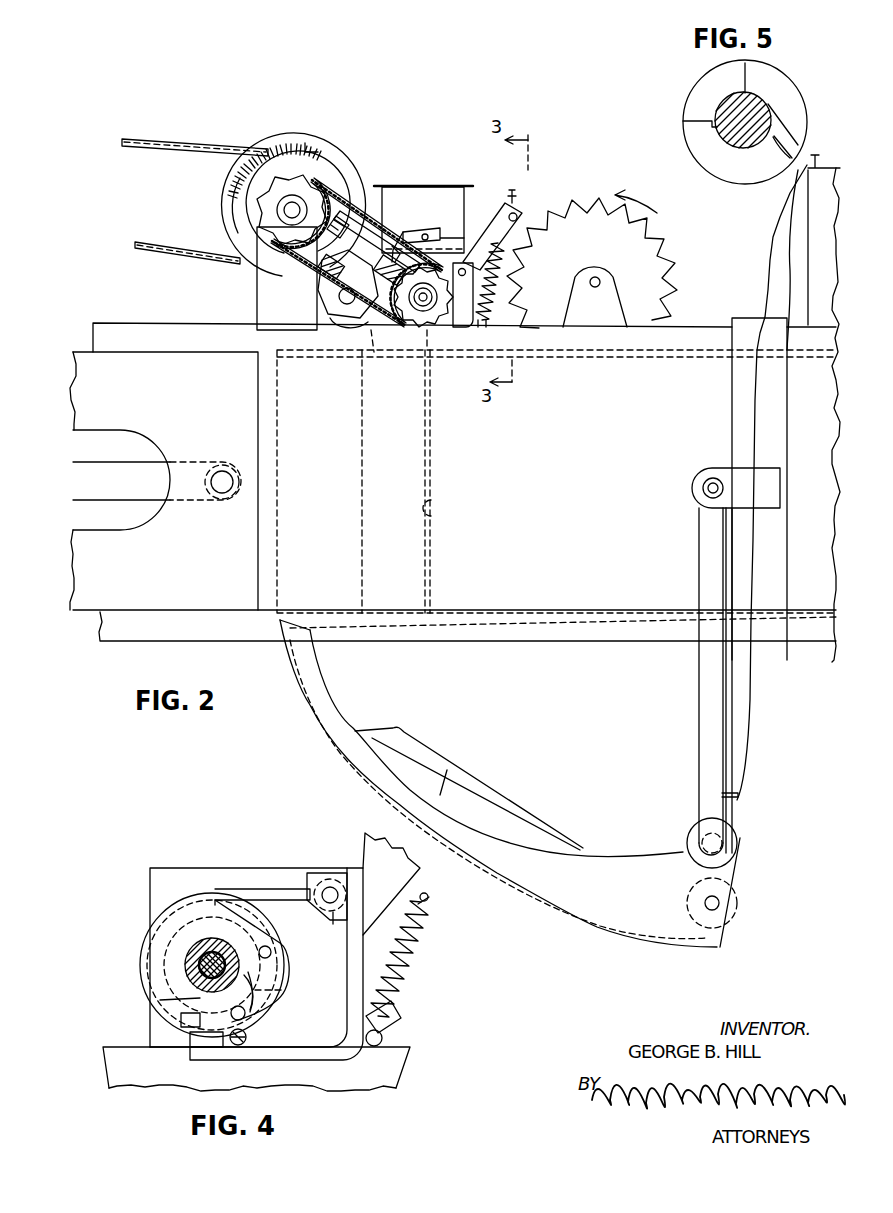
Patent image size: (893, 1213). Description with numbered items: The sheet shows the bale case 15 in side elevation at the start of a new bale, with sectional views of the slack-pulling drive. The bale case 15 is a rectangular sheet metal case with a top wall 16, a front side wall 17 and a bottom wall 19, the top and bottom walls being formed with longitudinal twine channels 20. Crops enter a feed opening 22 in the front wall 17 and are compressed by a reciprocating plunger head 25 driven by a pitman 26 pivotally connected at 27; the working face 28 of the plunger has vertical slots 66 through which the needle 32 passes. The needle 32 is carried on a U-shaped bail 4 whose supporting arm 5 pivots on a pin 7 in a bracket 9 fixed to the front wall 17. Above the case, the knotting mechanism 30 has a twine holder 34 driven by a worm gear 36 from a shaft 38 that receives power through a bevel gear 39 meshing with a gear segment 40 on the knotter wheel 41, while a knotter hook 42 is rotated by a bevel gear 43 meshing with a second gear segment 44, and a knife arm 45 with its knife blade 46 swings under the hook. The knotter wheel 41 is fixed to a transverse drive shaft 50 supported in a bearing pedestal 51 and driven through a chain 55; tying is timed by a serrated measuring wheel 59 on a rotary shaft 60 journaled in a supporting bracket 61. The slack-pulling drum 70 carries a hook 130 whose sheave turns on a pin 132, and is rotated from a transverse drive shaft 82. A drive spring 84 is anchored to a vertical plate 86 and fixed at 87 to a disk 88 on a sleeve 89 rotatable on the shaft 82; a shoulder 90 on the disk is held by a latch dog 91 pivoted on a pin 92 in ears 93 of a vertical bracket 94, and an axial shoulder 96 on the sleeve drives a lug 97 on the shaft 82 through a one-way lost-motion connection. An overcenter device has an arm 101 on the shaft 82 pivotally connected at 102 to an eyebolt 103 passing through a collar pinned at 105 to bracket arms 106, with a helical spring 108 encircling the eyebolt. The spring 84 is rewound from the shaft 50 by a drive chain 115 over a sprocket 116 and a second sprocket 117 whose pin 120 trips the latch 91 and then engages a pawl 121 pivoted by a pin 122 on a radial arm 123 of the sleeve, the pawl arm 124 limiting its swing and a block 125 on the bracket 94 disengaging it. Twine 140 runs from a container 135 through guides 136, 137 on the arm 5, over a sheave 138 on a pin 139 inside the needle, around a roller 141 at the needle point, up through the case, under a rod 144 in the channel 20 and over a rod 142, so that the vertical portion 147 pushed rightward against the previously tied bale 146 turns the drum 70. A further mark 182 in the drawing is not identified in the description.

In FIG. 2, the U-shaped bail 4 is at (718, 848).
In FIG. 2, the supporting arm 5 is at (722, 710).
In FIG. 2, the pin 7 is at (704, 491).
In FIG. 2, the bracket 9 is at (700, 474).
In FIG. 2, the bale case 15 is at (551, 473).
In FIG. 2, the top wall 16 is at (689, 356).
In FIG. 2, the front side wall 17 is at (530, 600).
In FIG. 2, the bottom wall 19 is at (631, 612).
In FIG. 2, the channel 20 is at (122, 325).
In FIG. 2, the feed opening 22 is at (265, 425).
In FIG. 2, the plunger head 25 is at (84, 612).
In FIG. 2, the pitman 26 is at (97, 472).
In FIG. 2, the pivotal connection 27 is at (222, 470).
In FIG. 2, the working face 28 is at (366, 456).
In FIG. 2, the knotting mechanism 30 is at (330, 340).
In FIG. 2, the needle 32 is at (531, 905).
In FIG. 2, the twine holder 34 is at (385, 330).
In FIG. 2, the worm gear 36 is at (390, 246).
In FIG. 2, the shaft 38 is at (363, 240).
In FIG. 2, the bevel gear 39 is at (334, 222).
In FIG. 2, the gear segment 40 is at (263, 152).
In FIG. 2, the knotter wheel 41 is at (222, 186).
In FIG. 2, the knotter hook 42 is at (340, 325).
In FIG. 2, the bevel gear 43 is at (322, 274).
In FIG. 2, the gear segment 44 is at (292, 142).
In FIG. 2, the knife arm 45 is at (322, 296).
In FIG. 2, the knife blade 46 is at (332, 316).
In FIG. 2, the transverse drive shaft 50 is at (288, 210).
In FIG. 2, the bearing pedestal 51 is at (262, 303).
In FIG. 2, the power transmitting chain 55 is at (150, 245).
In FIG. 2, the measuring wheel 59 is at (665, 258).
In FIG. 2, the rotary shaft 60 is at (596, 278).
In FIG. 2, the supporting bracket 61 is at (616, 306).
In FIG. 2, the slot 66 is at (278, 528).
In FIG. 2, the drum 70 is at (446, 196).
In FIG. 4, the drive shaft 82 is at (224, 962).
In FIG. 5, the drive shaft 82 is at (742, 135).
In FIG. 4, the drive spring 84 is at (154, 915).
In FIG. 4, the vertical plate 86 is at (238, 870).
In FIG. 4, the spring attachment point 87 is at (272, 954).
In FIG. 4, the disk 88 is at (188, 900).
In FIG. 4, the sleeve 89 is at (188, 950).
In FIG. 5, the sleeve 89 is at (779, 86).
In FIG. 4, the shoulder 90 is at (215, 893).
In FIG. 4, the latch dog 91 is at (259, 890).
In FIG. 4, the pivot pin 92 is at (329, 890).
In FIG. 4, the ears 93 is at (333, 918).
In FIG. 4, the vertical bracket 94 is at (356, 885).
In FIG. 4, the axially extending shoulder 96 is at (255, 992).
In FIG. 5, the axially extending shoulder 96 is at (688, 132).
In FIG. 4, the lug 97 is at (152, 1001).
In FIG. 5, the lug 97 is at (772, 150).
In FIG. 4, the arm 101 is at (384, 1038).
In FIG. 4, the pivotal connection 102 is at (373, 1047).
In FIG. 2, the eyebolt 103 is at (511, 198).
In FIG. 4, the eyebolt 103 is at (424, 913).
In FIG. 2, the pin 105 is at (518, 216).
In FIG. 2, the bracket arm 106 is at (497, 236).
In FIG. 2, the helical spring 108 is at (490, 306).
In FIG. 4, the helical spring 108 is at (416, 958).
In FIG. 2, the drive chain 115 is at (300, 260).
In FIG. 2, the sprocket 116 is at (280, 228).
In FIG. 2, the second sprocket 117 is at (460, 324).
In FIG. 4, the pin 120 is at (247, 1038).
In FIG. 4, the pawl 121 is at (181, 1020).
In FIG. 4, the pin 122 is at (248, 1015).
In FIG. 4, the arm 123 is at (256, 1006).
In FIG. 4, the arm 124 is at (286, 999).
In FIG. 4, the block 125 is at (200, 1043).
In FIG. 2, the hook 130 is at (404, 230).
In FIG. 2, the pin 132 is at (428, 236).
In FIG. 2, the container 135 is at (818, 250).
In FIG. 2, the guide 136 is at (736, 520).
In FIG. 2, the guide 137 is at (738, 795).
In FIG. 2, the sheave 138 is at (732, 920).
In FIG. 2, the pin 139 is at (716, 904).
In FIG. 2, the twine 140 is at (763, 287).
In FIG. 2, the roller 141 is at (318, 636).
In FIG. 2, the cylindrical rod 142 is at (386, 196).
In FIG. 2, the rod 144 is at (373, 356).
In FIG. 2, the previously tied bale 146 is at (432, 505).
In FIG. 2, the vertically extending portion 147 is at (424, 470).
In FIG. 2, the line 182 is at (429, 350).